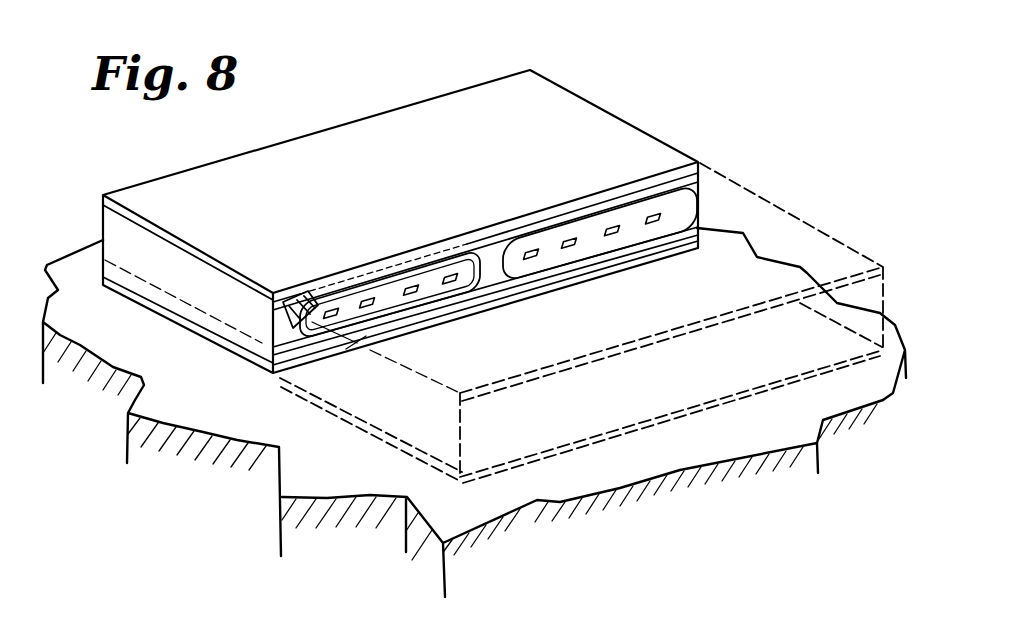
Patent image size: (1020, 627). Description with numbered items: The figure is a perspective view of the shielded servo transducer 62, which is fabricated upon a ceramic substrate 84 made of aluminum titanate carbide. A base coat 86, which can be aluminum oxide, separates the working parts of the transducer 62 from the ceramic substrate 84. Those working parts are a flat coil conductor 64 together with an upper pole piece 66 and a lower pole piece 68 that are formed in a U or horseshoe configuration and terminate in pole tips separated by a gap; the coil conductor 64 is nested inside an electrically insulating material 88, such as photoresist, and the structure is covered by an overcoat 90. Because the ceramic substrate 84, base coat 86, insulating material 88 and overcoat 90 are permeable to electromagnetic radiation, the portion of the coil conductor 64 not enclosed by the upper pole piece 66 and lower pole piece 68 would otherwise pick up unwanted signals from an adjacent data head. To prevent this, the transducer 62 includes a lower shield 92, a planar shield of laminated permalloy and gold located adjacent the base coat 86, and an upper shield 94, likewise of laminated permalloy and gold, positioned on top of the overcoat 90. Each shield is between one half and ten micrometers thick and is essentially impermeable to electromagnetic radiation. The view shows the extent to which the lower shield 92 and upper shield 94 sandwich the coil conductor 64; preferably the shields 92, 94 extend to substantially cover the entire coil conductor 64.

The transducer 62 is at (697, 117).
The coil conductor 64 is at (568, 243).
The upper pole piece 66 is at (372, 283).
The lower pole piece 68 is at (412, 306).
The ceramic substrate 84 is at (712, 468).
The base coat 86 is at (553, 272).
The insulating material 88 is at (700, 191).
The overcoat 90 is at (706, 173).
The lower shield 92 is at (647, 262).
The upper shield 94 is at (600, 117).